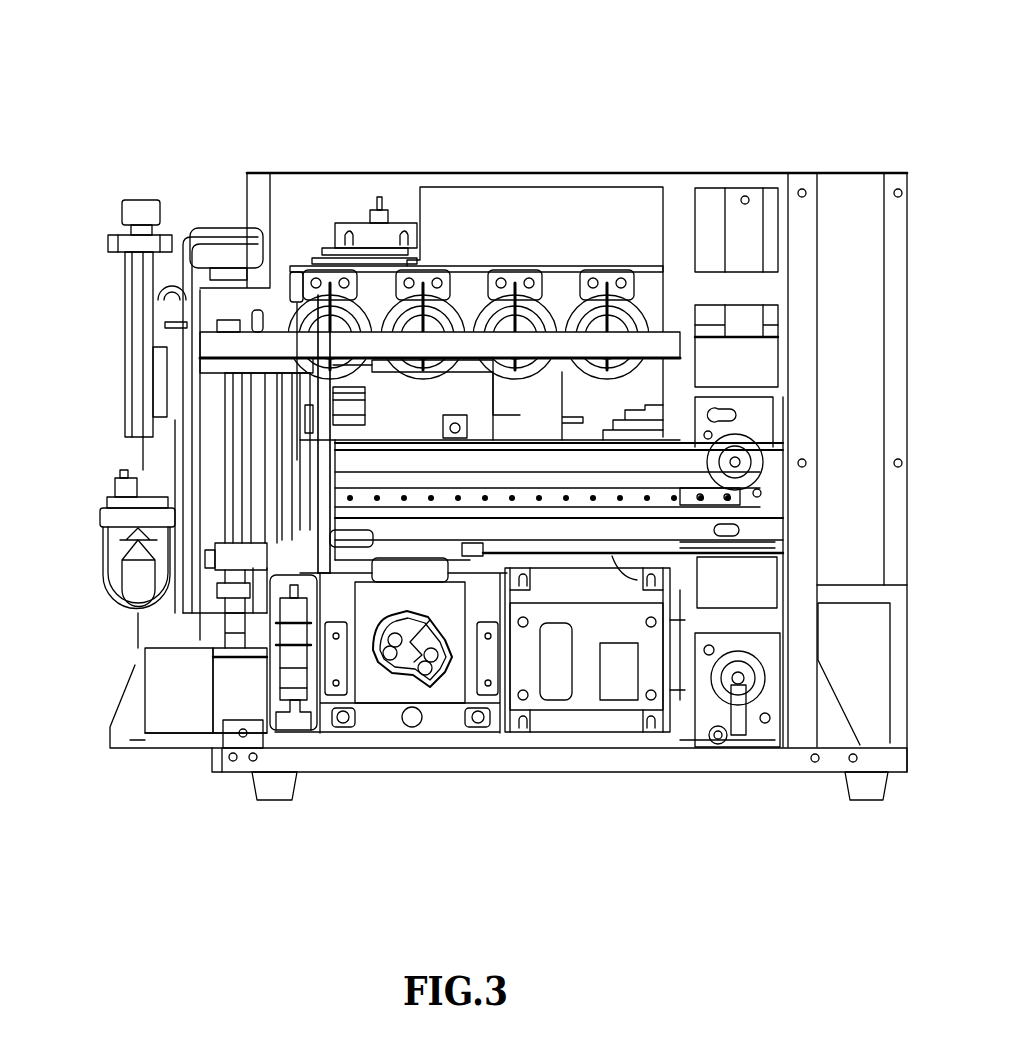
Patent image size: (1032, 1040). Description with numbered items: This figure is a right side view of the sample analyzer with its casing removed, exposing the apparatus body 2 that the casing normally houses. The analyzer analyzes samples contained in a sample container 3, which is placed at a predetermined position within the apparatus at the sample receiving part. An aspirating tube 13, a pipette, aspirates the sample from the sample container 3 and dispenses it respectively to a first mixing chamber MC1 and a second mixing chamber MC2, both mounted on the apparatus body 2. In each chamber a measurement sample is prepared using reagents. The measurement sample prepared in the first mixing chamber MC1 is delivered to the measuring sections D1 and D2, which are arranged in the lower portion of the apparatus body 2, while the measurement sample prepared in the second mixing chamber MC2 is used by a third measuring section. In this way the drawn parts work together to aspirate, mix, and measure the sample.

The apparatus body 2 is at (598, 132).
The aspirating tube 13 is at (233, 443).
The sample container 3 is at (233, 627).
The measuring section D2 is at (190, 705).
The first mixing chamber MC1 is at (298, 655).
The measuring section D1 is at (388, 667).
The second mixing chamber MC2 is at (555, 687).